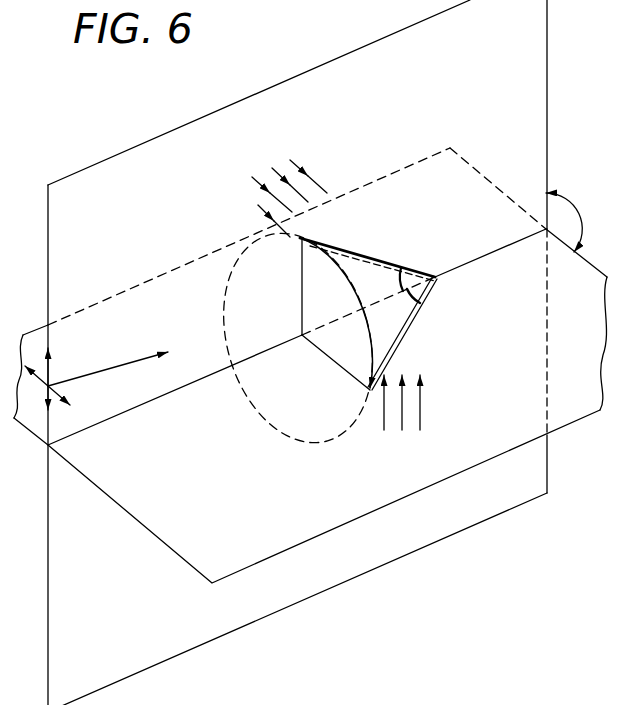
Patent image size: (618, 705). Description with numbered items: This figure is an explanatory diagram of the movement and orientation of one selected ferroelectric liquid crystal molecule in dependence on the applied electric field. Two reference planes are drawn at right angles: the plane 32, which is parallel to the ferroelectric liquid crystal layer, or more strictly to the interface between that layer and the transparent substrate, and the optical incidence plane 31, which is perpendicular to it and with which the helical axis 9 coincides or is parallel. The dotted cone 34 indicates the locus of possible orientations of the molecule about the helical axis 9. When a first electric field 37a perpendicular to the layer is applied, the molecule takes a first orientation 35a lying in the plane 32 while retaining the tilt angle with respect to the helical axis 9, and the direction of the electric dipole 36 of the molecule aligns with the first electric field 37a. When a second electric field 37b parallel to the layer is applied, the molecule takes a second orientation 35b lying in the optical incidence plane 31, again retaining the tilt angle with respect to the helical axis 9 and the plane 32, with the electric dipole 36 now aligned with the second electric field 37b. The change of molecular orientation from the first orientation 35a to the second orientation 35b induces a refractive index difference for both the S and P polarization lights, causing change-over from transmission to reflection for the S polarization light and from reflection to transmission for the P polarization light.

The optical incidence plane 31 is at (108, 170).
The plane 32 is at (200, 563).
The helical axis 9 is at (137, 408).
The dotted cone 34 is at (306, 438).
The first orientation 35a is at (411, 318).
The second orientation 35b is at (372, 256).
The electric dipole 36 is at (283, 237).
The first electric field 37a is at (421, 400).
The second electric field 37b is at (318, 176).